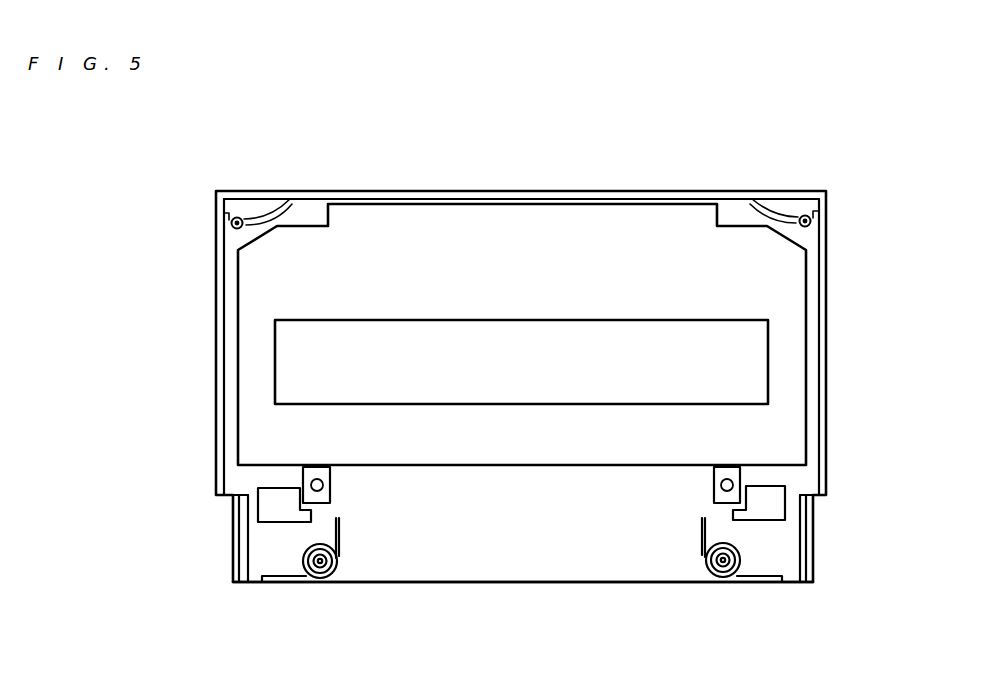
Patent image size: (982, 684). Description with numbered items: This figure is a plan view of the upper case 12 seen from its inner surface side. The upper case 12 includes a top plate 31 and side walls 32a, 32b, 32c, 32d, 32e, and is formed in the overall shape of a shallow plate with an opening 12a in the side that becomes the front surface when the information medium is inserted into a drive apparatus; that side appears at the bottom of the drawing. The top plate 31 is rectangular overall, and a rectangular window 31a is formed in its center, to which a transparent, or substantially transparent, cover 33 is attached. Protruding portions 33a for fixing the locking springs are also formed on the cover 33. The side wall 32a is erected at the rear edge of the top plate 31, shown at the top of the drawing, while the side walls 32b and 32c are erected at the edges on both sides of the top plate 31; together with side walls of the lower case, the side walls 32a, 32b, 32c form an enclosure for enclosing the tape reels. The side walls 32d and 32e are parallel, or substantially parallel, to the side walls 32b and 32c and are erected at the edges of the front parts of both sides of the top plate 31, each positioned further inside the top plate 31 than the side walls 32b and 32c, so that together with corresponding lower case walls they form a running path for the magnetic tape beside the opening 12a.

The upper case 12 is at (524, 149).
The opening 12a is at (561, 582).
The top plate 31 is at (735, 218).
The rectangular window 31a is at (688, 342).
The side wall 32a is at (380, 199).
The side wall 32b is at (222, 334).
The side wall 32c is at (822, 333).
The side wall 32d is at (818, 579).
The side wall 32e is at (236, 578).
The transparent cover 33 is at (578, 236).
The protruding portions 33a is at (325, 485).